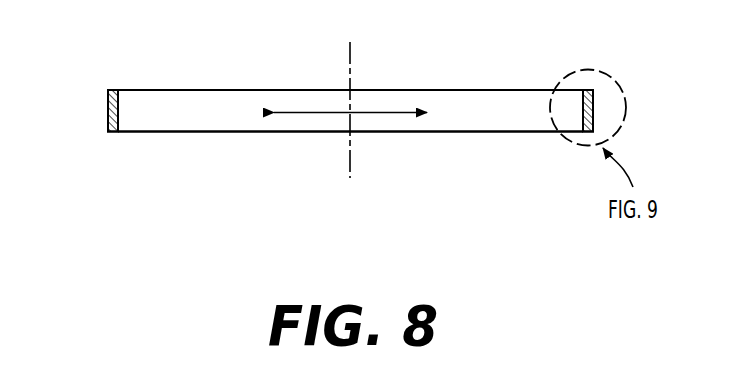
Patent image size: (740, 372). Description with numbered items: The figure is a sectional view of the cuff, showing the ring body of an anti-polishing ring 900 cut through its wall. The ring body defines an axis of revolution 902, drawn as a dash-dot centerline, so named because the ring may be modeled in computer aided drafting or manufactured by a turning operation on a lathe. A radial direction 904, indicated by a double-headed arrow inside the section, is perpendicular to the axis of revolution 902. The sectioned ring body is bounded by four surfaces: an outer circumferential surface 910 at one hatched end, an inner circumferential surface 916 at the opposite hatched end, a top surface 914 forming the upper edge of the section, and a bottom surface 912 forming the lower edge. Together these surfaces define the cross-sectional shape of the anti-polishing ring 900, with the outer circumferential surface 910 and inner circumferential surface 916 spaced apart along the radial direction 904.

The anti-polishing ring 900 is at (408, 85).
The axis of revolution 902 is at (348, 98).
The radial direction 904 is at (298, 114).
The outer circumferential surface 910 is at (108, 105).
The bottom surface 912 is at (143, 133).
The top surface 914 is at (157, 89).
The inner circumferential surface 916 is at (507, 121).